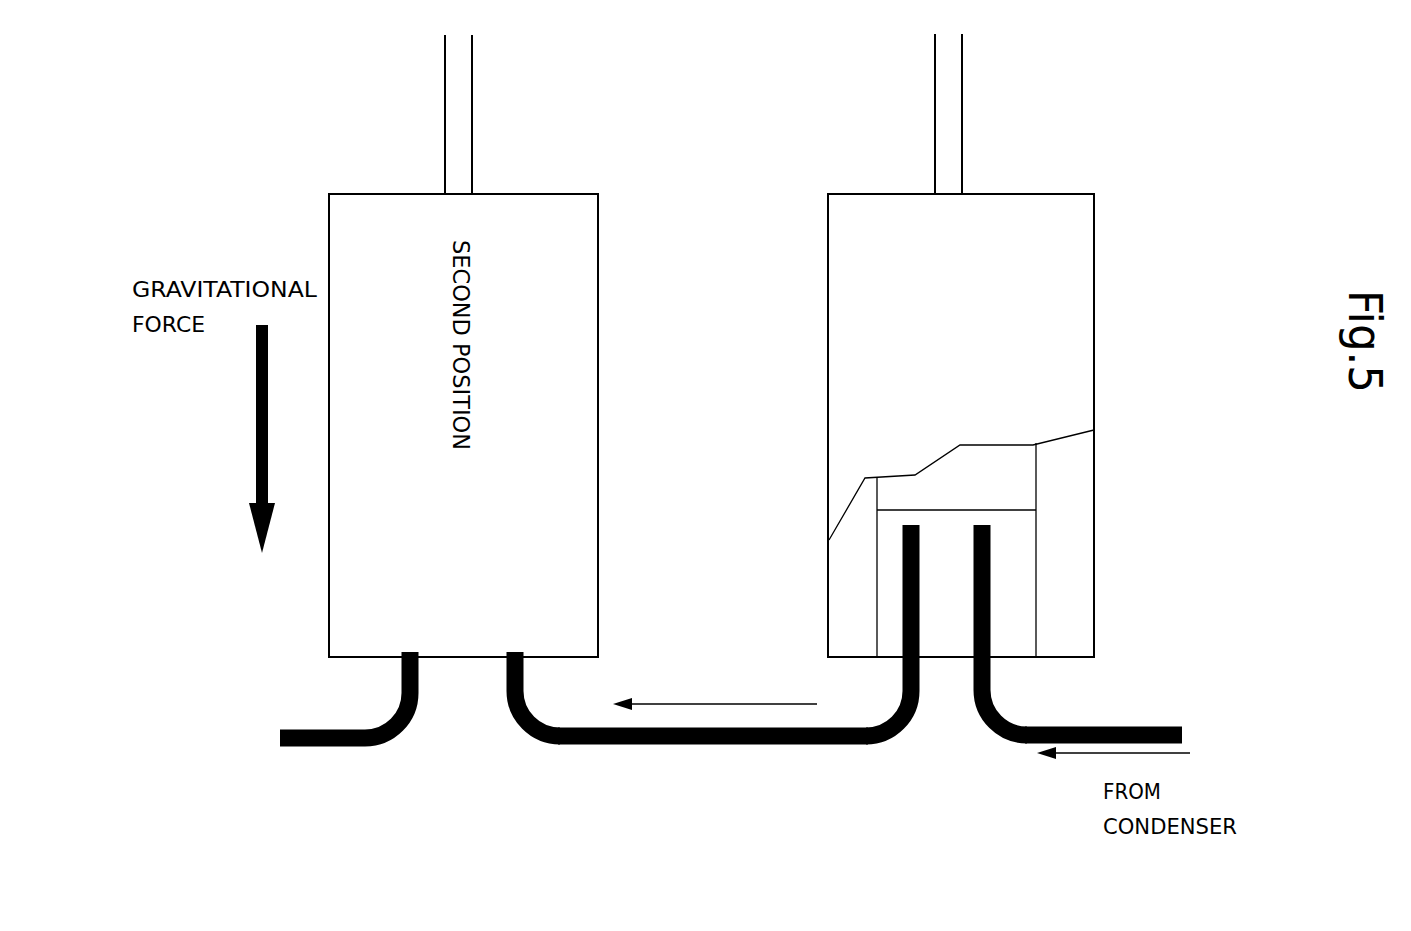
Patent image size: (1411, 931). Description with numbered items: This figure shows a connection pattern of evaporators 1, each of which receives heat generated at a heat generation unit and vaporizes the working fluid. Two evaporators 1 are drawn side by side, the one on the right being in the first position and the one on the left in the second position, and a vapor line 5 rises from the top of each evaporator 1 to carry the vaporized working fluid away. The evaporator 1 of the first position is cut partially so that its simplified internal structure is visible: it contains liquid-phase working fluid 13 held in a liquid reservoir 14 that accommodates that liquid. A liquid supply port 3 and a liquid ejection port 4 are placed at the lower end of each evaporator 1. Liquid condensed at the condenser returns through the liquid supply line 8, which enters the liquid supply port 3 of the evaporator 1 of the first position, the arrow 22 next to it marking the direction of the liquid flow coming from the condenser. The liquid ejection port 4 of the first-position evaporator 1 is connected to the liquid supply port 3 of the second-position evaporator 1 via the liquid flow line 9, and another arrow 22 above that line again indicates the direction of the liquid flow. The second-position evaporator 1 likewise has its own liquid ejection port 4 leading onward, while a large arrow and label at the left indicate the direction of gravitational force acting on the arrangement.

The evaporator 1 is at (1045, 363).
The liquid supply port 3 is at (508, 660).
The liquid ejection port 4 is at (402, 658).
The vapor line 5 is at (477, 111).
The liquid supply line 8 is at (1030, 722).
The liquid flow line 9 is at (820, 745).
The liquid-phase working fluid 13 is at (1007, 565).
The liquid reservoir 14 is at (1002, 485).
The arrow 22 is at (672, 700).